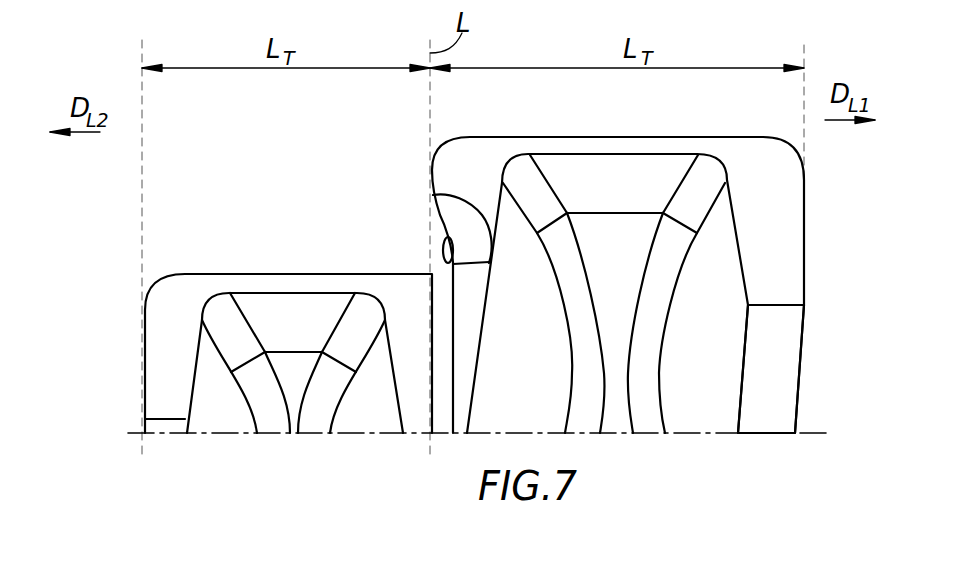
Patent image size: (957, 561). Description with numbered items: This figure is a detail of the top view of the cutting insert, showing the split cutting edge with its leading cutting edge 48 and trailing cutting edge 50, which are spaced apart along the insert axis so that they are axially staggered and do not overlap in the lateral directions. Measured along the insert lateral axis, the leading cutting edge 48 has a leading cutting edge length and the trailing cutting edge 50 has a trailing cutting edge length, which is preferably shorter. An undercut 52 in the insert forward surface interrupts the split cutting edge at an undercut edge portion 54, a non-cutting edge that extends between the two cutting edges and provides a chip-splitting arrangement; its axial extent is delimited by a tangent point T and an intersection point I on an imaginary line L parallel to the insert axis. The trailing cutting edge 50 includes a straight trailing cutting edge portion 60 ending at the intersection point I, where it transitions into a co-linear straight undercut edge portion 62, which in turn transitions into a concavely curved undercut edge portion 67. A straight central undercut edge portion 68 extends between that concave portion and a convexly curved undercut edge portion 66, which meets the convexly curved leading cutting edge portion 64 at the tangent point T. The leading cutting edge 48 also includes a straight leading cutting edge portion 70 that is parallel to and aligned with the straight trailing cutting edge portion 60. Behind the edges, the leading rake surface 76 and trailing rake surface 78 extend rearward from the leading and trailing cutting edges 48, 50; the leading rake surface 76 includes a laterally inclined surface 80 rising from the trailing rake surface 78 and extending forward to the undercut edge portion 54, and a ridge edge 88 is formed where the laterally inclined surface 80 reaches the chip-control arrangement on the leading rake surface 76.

The leading cutting edge 48 is at (590, 221).
The trailing cutting edge 50 is at (218, 293).
The undercut 52 is at (445, 142).
The undercut edge portion 54 is at (445, 142).
The straight trailing cutting edge portion 60 is at (218, 293).
The straight undercut edge portion 62 is at (445, 142).
The convexly curved leading cutting edge portion 64 is at (590, 221).
The convexly curved undercut edge portion 66 is at (445, 142).
The concavely curved undercut edge portion 67 is at (450, 237).
The straight central undercut edge portion 68 is at (445, 142).
The straight leading cutting edge portion 70 is at (590, 226).
The leading rake surface 76 is at (590, 226).
The trailing rake surface 78 is at (218, 353).
The laterally inclined surface 80 is at (539, 226).
The ridge edge 88 is at (539, 226).